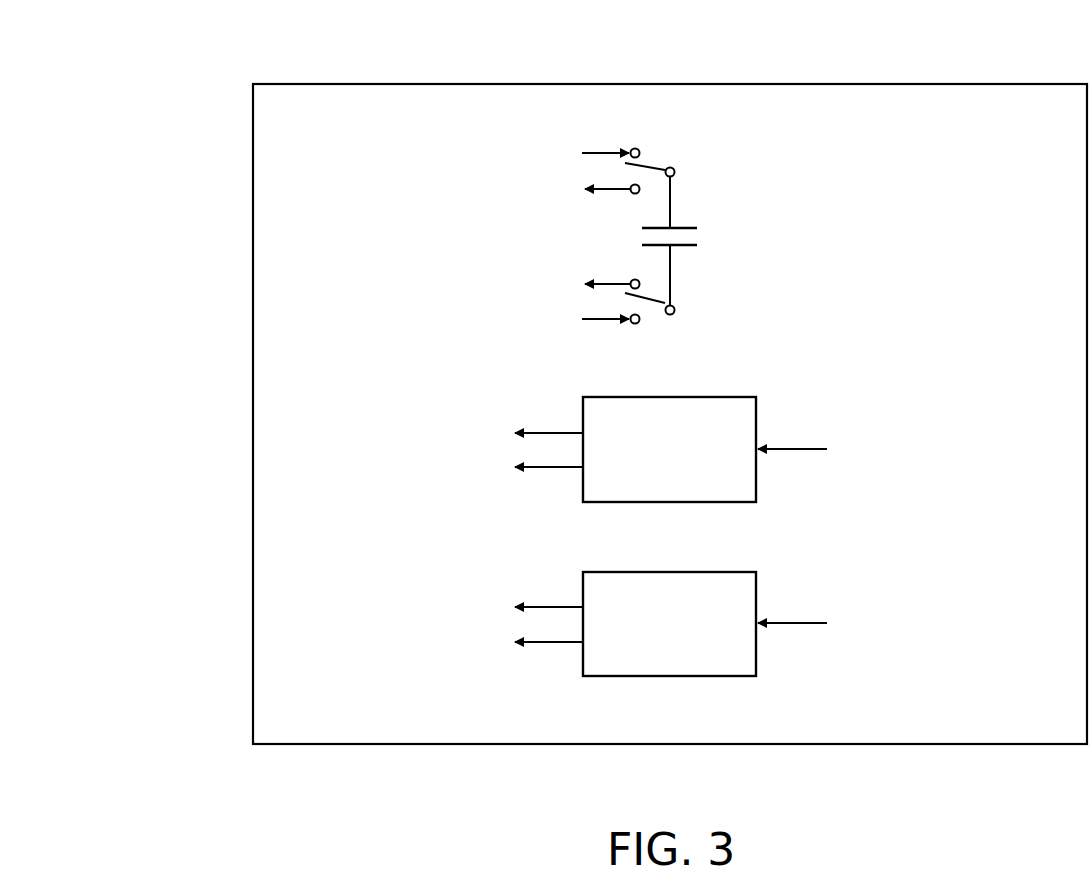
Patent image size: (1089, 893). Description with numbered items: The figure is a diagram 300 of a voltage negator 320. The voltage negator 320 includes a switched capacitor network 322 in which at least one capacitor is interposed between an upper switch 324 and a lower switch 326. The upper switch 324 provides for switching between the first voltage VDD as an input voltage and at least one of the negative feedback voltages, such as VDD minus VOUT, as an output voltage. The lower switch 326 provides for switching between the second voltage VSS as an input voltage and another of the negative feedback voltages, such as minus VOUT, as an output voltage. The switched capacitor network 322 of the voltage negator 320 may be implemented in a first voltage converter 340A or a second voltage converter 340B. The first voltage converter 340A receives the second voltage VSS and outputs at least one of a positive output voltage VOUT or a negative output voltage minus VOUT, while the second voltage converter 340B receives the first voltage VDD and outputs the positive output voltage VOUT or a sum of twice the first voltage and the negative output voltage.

The diagram 300 is at (130, 40).
The voltage negator 320 is at (758, 58).
The switched capacitor network 322 is at (775, 207).
The upper switch 324 is at (671, 141).
The lower switch 326 is at (672, 336).
The first voltage converter 340A is at (648, 470).
The second voltage converter 340B is at (648, 644).